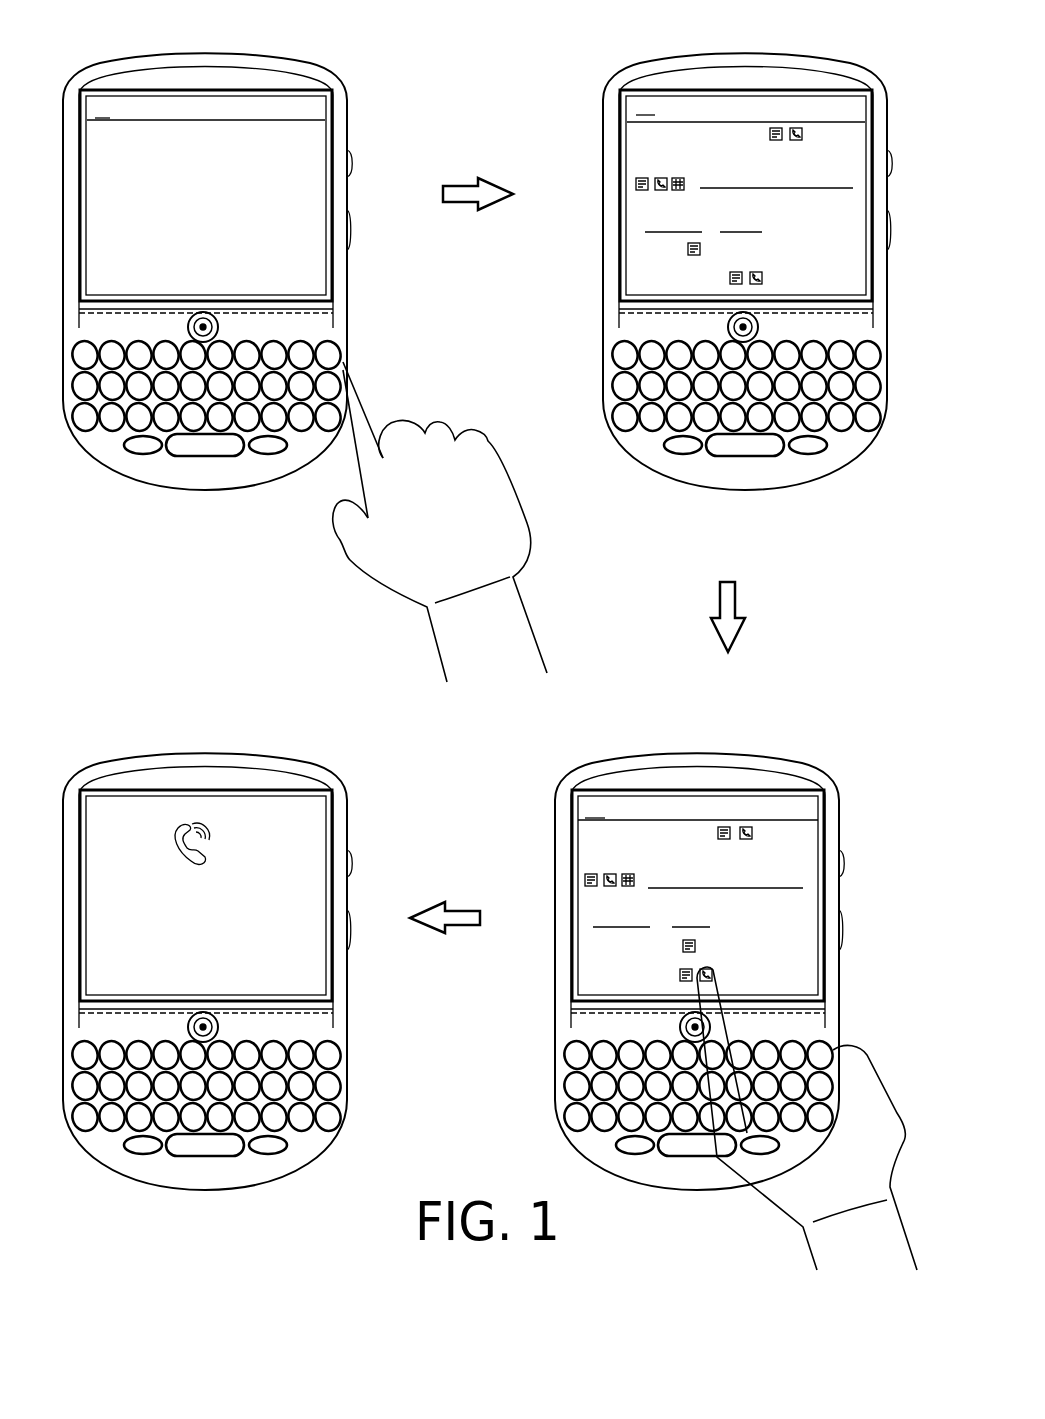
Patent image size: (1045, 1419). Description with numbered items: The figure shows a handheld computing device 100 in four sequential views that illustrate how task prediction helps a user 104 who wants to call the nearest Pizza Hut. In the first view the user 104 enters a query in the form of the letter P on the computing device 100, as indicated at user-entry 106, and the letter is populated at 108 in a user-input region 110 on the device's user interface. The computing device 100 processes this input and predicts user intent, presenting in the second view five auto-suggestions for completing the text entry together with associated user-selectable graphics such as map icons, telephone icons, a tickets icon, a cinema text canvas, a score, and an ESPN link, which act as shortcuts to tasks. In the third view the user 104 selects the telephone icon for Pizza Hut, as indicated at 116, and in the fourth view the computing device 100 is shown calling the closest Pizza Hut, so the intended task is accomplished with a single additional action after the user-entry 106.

The computing device 100 is at (311, 60).
The user 104 is at (883, 1195).
The user-entry 106 is at (350, 357).
The populated letter P 108 is at (112, 108).
The user-input region 110 is at (303, 118).
The selection 116 is at (720, 974).